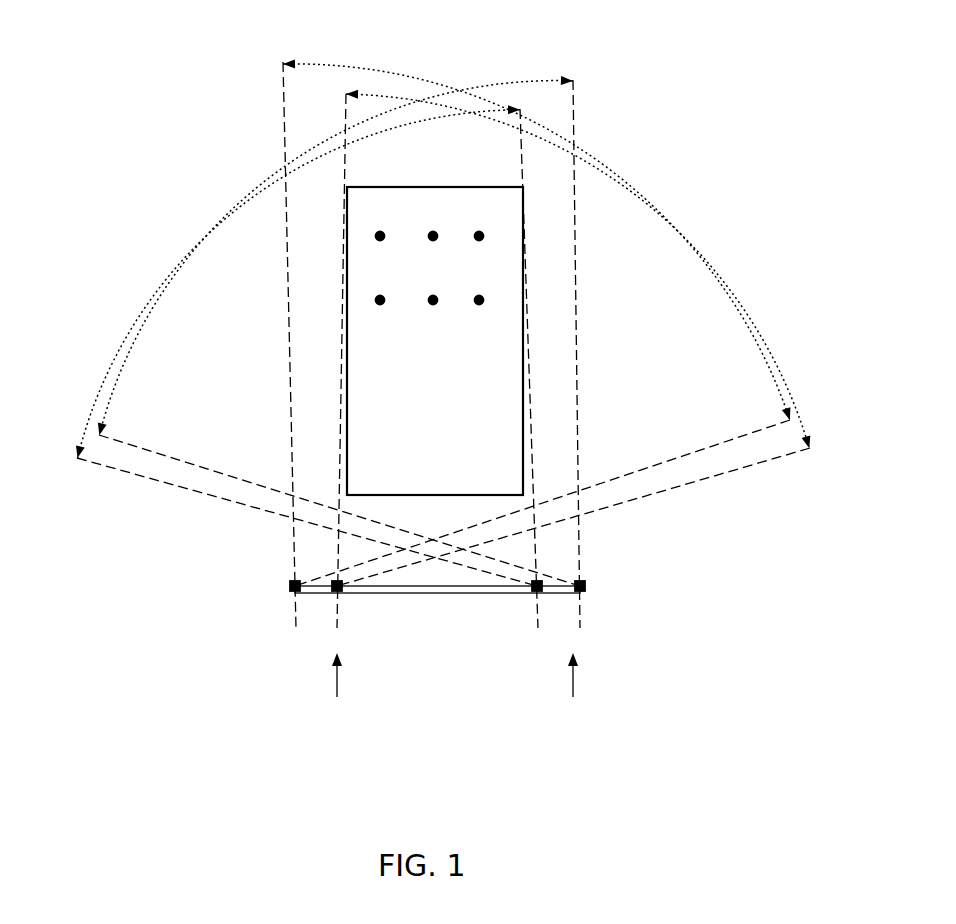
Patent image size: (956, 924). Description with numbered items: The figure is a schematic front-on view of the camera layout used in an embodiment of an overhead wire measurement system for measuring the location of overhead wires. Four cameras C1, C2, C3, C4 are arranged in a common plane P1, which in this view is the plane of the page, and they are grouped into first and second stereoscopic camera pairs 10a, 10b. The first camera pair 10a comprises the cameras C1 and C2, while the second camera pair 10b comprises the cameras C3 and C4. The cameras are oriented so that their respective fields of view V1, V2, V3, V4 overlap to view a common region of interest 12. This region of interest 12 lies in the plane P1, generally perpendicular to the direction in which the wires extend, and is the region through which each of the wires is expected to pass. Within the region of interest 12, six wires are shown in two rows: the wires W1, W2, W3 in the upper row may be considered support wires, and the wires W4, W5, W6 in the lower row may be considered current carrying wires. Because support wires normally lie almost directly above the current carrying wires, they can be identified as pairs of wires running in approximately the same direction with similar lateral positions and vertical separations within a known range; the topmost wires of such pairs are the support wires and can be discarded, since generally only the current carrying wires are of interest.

The region of interest 12 is at (522, 369).
The wire W1 is at (380, 236).
The wire W2 is at (433, 236).
The wire W3 is at (479, 236).
The wire W4 is at (380, 300).
The wire W5 is at (433, 300).
The wire W6 is at (479, 300).
The plane P1 is at (819, 201).
The field of view V1 is at (360, 68).
The field of view V2 is at (380, 102).
The field of view V3 is at (405, 126).
The field of view V4 is at (537, 78).
The camera C1 is at (293, 586).
The camera C2 is at (337, 588).
The camera C3 is at (535, 587).
The camera C4 is at (587, 585).
The first stereoscopic camera pair 10a is at (338, 691).
The second stereoscopic camera pair 10b is at (573, 691).